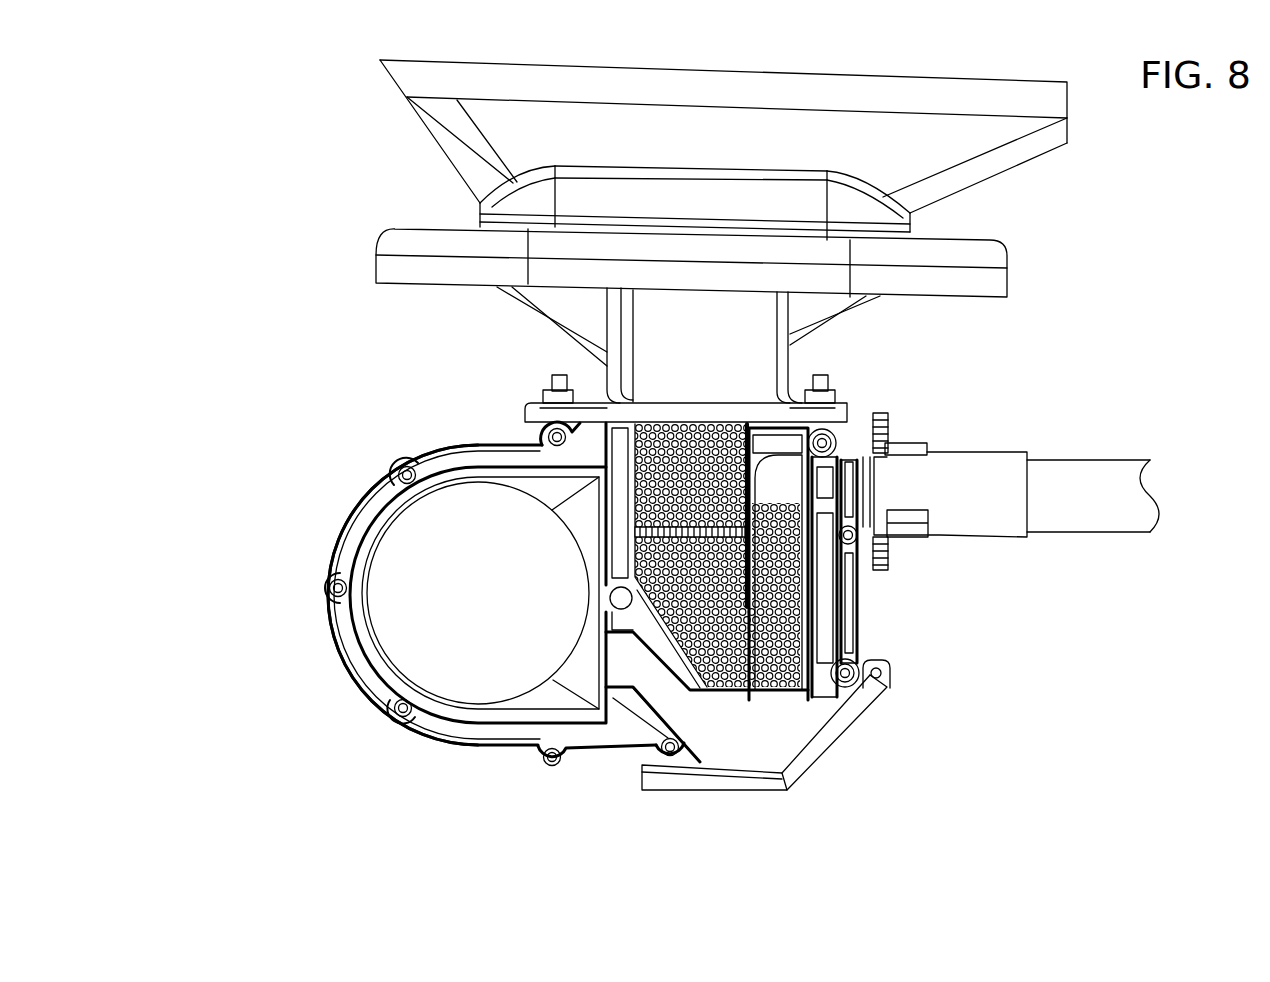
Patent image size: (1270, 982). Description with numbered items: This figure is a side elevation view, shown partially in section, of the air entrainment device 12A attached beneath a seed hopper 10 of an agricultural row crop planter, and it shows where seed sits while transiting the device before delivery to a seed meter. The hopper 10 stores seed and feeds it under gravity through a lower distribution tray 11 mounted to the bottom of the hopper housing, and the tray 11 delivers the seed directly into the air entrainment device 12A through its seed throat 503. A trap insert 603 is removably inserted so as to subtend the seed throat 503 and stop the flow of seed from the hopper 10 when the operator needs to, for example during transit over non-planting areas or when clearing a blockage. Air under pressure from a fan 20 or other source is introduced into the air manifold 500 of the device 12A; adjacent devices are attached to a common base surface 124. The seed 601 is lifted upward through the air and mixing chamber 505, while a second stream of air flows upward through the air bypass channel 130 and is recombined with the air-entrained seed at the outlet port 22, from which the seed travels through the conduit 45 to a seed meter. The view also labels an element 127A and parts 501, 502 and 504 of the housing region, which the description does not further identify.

The seed hopper 10 is at (1013, 168).
The lower distribution tray 11 is at (792, 367).
The air entrainment device 12A is at (669, 590).
The fan 20 is at (438, 500).
The outlet port 22 is at (868, 450).
The conduit 45 is at (1048, 455).
The surface 124 is at (780, 698).
The housing cover 127A is at (327, 643).
The air bypass channel 130 is at (818, 608).
The air manifold 500 is at (492, 603).
The chute wall 501 is at (645, 690).
The mounting bracket 502 is at (750, 738).
The seed throat 503 is at (540, 403).
The inner wall 504 is at (633, 640).
The air and mixing chamber 505 is at (855, 572).
The seed 601 is at (645, 423).
The trap insert 603 is at (709, 445).